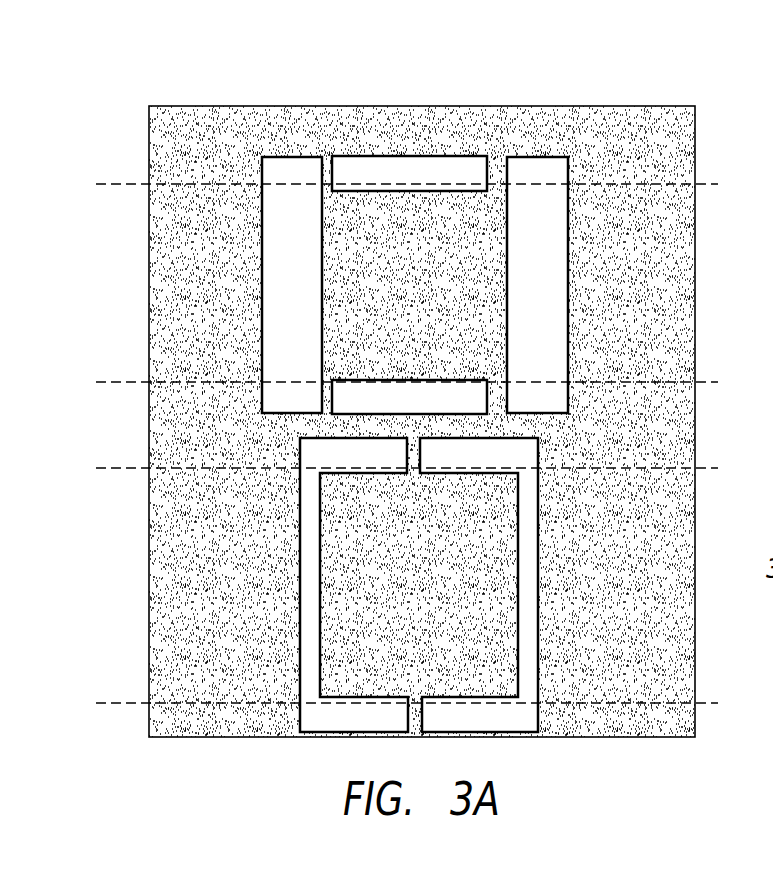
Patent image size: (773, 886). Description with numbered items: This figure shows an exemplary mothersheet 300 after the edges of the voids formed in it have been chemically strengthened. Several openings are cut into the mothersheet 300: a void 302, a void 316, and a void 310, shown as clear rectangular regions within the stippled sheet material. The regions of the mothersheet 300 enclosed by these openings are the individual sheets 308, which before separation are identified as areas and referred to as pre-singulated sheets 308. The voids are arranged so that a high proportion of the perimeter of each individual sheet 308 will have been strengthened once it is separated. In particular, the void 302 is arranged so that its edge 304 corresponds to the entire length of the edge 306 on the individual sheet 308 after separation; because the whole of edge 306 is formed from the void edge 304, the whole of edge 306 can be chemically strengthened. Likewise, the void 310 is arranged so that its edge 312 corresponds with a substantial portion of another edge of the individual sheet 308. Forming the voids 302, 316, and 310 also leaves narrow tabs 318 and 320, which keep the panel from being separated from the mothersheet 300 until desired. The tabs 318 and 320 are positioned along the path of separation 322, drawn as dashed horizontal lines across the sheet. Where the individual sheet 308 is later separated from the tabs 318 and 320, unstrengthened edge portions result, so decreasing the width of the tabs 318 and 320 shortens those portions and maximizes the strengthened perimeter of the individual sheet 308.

The mothersheet 300 is at (220, 678).
The void 302 is at (295, 212).
The edge 304 is at (322, 355).
The edge 306 is at (434, 542).
The individual sheet 308 is at (385, 257).
The void 310 is at (402, 163).
The edge 312 is at (420, 191).
The void 316 is at (555, 350).
The tab 318 is at (327, 167).
The tab 320 is at (496, 165).
The path of separation 322 is at (122, 184).